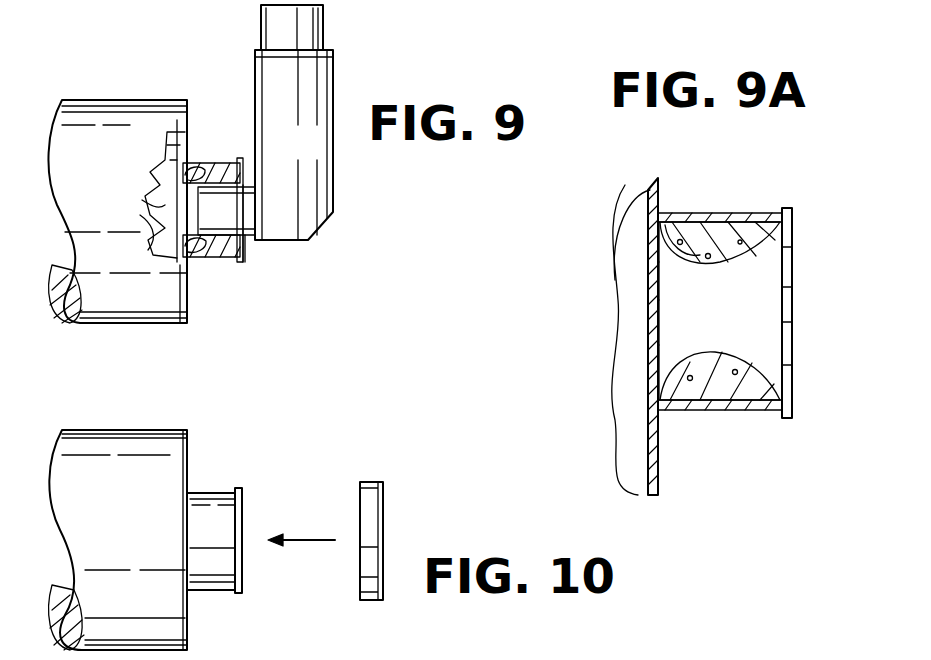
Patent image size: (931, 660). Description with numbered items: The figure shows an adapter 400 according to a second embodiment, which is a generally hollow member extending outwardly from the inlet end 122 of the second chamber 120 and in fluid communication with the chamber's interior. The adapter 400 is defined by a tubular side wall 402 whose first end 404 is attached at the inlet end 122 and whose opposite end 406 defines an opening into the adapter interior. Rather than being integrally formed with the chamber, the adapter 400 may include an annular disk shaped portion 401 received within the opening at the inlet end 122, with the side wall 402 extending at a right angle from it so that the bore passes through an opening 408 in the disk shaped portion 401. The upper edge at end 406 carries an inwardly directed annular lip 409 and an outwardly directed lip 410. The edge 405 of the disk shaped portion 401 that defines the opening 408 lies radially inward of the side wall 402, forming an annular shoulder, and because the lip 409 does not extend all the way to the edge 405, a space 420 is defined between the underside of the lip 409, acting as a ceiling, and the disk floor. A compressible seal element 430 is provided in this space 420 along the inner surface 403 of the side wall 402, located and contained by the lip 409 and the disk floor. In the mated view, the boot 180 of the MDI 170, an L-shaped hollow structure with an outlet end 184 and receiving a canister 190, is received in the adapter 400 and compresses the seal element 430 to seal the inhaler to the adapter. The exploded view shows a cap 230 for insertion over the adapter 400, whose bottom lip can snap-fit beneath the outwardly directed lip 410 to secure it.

In FIG. 9, the second chamber 120 is at (127, 115).
In FIG. 10, the second chamber 120 is at (130, 450).
In FIG. 9, the inlet end 122 is at (190, 278).
In FIG. 9A, the inlet end 122 is at (648, 468).
In FIG. 10, the inlet end 122 is at (190, 478).
In FIG. 9, the MDI 170 is at (253, 70).
In FIG. 9, the boot structure 180 is at (240, 225).
In FIG. 9, the outlet end 184 is at (177, 213).
In FIG. 9, the canister 190 is at (315, 37).
In FIG. 10, the cap 230 is at (375, 512).
In FIG. 9A, the adapter 400 is at (718, 214).
In FIG. 10, the adapter 400 is at (212, 570).
In FIG. 9A, the disk shaped portion 401 is at (655, 240).
In FIG. 9, the side wall 402 is at (215, 163).
In FIG. 9A, the side wall 402 is at (745, 402).
In FIG. 10, the side wall 402 is at (213, 545).
In FIG. 9A, the inner surface 403 is at (683, 240).
In FIG. 9, the first end 404 is at (143, 237).
In FIG. 9A, the first end 404 is at (648, 393).
In FIG. 9A, the edge 405 is at (650, 270).
In FIG. 9, the opposite end 406 is at (243, 250).
In FIG. 9A, the opposite end 406 is at (795, 268).
In FIG. 10, the opposite end 406 is at (245, 528).
In FIG. 9A, the opening 408 is at (650, 360).
In FIG. 9A, the annular lip 409 is at (760, 265).
In FIG. 9, the outwardly directed lip 410 is at (240, 262).
In FIG. 9A, the outwardly directed lip 410 is at (792, 420).
In FIG. 10, the outwardly directed lip 410 is at (245, 497).
In FIG. 9A, the space 420 is at (655, 320).
In FIG. 9, the seal element 430 is at (294, 145).
In FIG. 9A, the seal element 430 is at (712, 400).